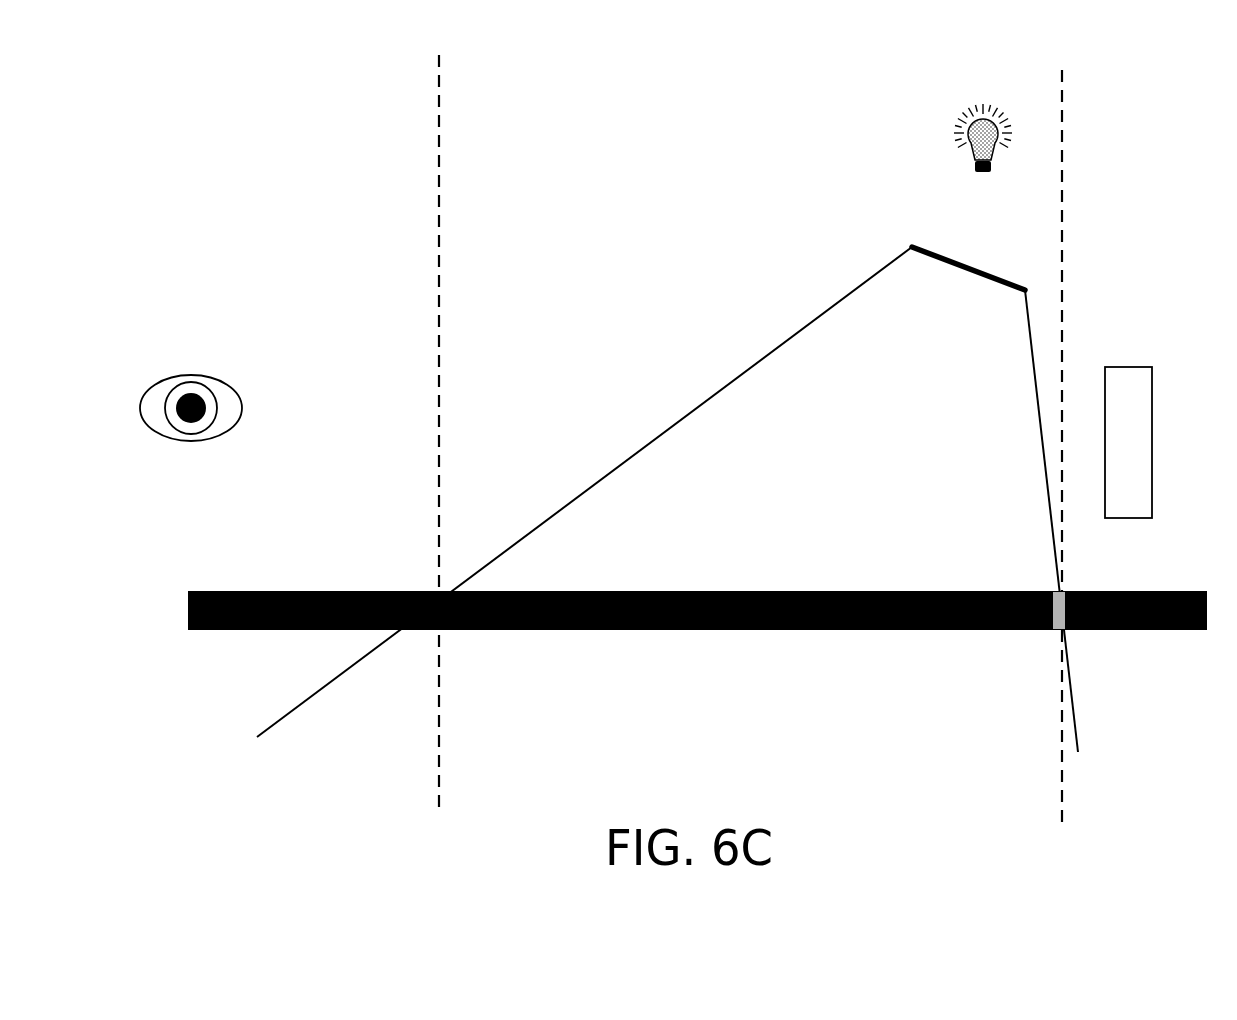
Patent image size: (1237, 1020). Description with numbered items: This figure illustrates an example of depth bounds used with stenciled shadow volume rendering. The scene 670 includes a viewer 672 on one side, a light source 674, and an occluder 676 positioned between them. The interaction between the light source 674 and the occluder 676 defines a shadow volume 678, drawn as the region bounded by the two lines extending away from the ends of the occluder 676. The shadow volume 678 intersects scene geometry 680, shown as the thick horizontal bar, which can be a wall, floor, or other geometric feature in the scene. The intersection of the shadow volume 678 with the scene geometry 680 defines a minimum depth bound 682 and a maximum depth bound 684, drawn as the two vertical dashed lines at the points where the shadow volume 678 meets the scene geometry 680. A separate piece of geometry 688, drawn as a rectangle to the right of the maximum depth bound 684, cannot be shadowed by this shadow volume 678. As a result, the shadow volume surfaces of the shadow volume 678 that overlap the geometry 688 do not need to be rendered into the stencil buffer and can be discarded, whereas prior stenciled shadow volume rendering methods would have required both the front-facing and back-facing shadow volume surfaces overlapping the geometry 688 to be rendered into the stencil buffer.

The scene 670 is at (259, 120).
The viewer 672 is at (235, 392).
The light source 674 is at (967, 115).
The occluder 676 is at (913, 243).
The shadow volume 678 is at (667, 499).
The scene geometry 680 is at (843, 585).
The minimum depth bound 682 is at (445, 167).
The maximum depth bound 684 is at (1067, 167).
The geometry 688 is at (1143, 365).